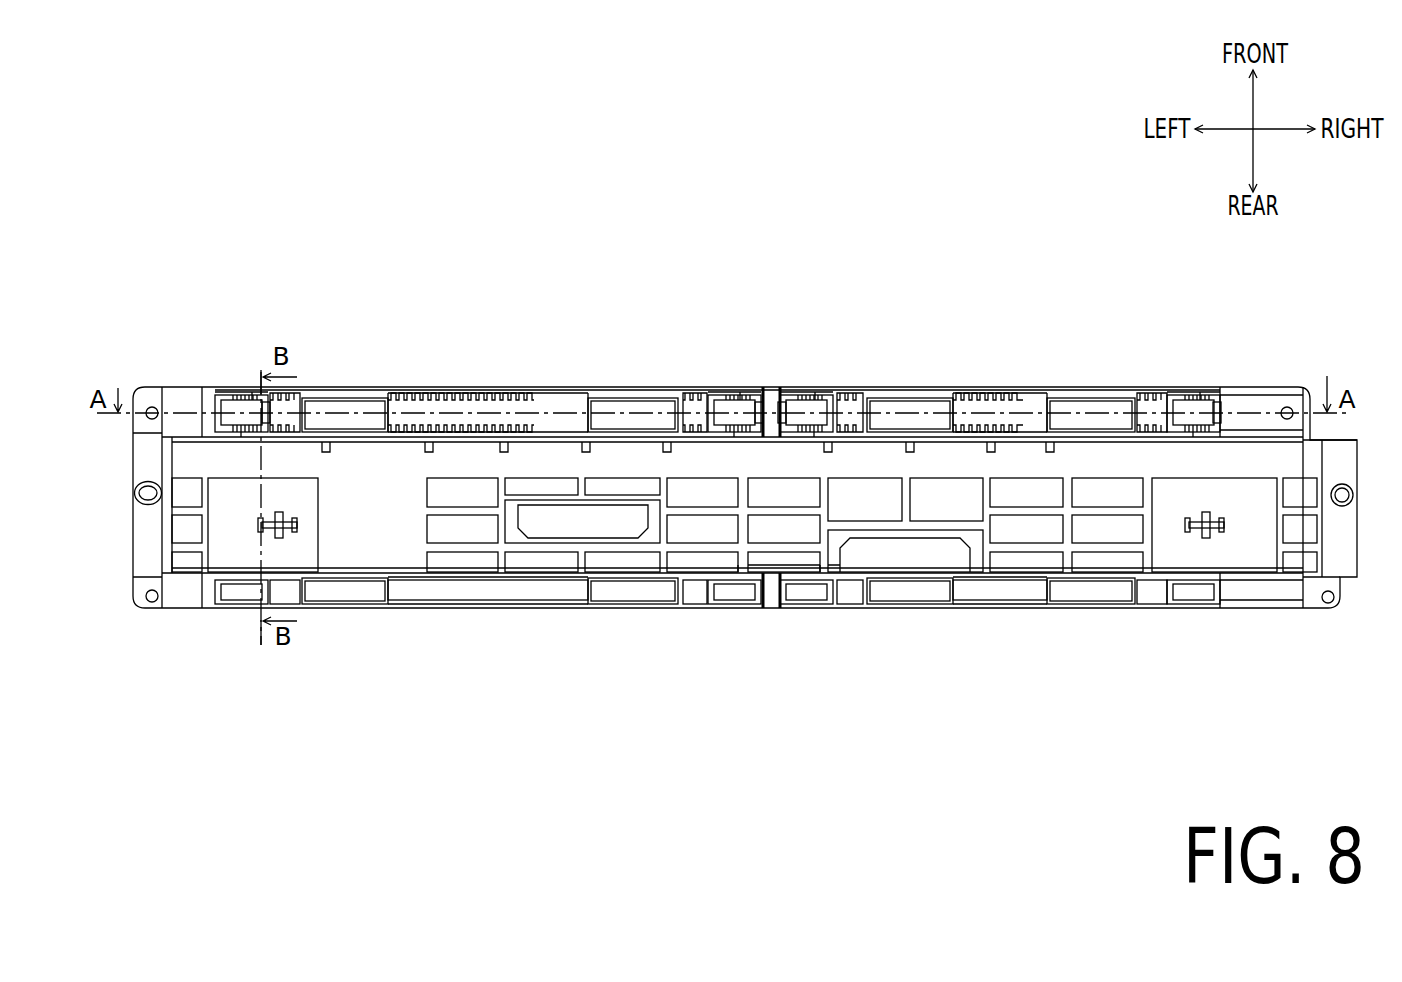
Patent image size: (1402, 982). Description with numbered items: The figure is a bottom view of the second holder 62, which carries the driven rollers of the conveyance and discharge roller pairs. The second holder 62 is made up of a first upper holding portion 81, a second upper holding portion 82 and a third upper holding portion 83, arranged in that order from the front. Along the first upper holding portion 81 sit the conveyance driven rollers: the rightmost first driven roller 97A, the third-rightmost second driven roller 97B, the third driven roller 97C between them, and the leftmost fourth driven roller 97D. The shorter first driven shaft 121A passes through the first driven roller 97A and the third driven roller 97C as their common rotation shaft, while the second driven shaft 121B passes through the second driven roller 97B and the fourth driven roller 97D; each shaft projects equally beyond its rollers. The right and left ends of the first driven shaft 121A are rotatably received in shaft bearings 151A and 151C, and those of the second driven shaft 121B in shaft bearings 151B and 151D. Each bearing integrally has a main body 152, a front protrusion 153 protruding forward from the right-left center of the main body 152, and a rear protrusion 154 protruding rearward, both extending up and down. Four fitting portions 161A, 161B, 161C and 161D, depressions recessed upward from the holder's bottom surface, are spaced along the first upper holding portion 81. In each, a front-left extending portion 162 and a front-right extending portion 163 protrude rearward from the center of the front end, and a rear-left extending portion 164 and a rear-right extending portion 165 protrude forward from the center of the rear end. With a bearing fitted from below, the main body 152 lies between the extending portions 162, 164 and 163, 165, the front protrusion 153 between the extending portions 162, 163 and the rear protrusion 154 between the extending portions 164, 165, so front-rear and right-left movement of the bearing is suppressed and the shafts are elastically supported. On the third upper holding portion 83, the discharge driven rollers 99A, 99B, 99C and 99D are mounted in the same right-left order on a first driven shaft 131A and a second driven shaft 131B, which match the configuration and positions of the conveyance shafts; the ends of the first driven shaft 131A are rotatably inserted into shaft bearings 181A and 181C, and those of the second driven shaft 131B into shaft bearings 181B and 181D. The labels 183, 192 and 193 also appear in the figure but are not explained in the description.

The second holder 62 is at (610, 777).
The first upper holding portion 81 is at (1245, 395).
The second upper holding portion 82 is at (1247, 473).
The third upper holding portion 83 is at (1293, 598).
The first driven roller 97A is at (1083, 403).
The second driven roller 97B is at (610, 403).
The third driven roller 97C is at (925, 403).
The fourth driven roller 97D is at (348, 403).
The first driven roller 99A is at (1075, 597).
The second driven roller 99B is at (608, 598).
The third driven roller 99C is at (932, 598).
The fourth driven roller 99D is at (358, 597).
The first driven shaft 121A is at (1005, 408).
The second driven shaft 121B is at (492, 410).
The first driven shaft 131A is at (1012, 595).
The second driven shaft 131B is at (458, 590).
The shaft bearing 151A is at (1168, 428).
The shaft bearing 151B is at (710, 423).
The shaft bearing 151C is at (780, 423).
The shaft bearing 151D is at (218, 430).
The main body 152 is at (225, 405).
The front protrusion 153 is at (243, 395).
The rear protrusion 154 is at (242, 437).
The fitting portion 161A is at (1217, 433).
The fitting portion 161B is at (745, 437).
The fitting portion 161C is at (845, 397).
The fitting portion 161D is at (272, 432).
The front-left extending portion 162 is at (236, 393).
The front-right extending portion 163 is at (252, 395).
The rear-left extending portion 164 is at (240, 437).
The rear-right extending portion 165 is at (255, 432).
The shaft bearing 181A is at (1167, 605).
The shaft bearing 181B is at (707, 603).
The shaft bearing 181C is at (785, 603).
The shaft bearing 181D is at (215, 605).
The rib 183 is at (743, 570).
The recess 192 is at (790, 567).
The rib 193 is at (753, 570).